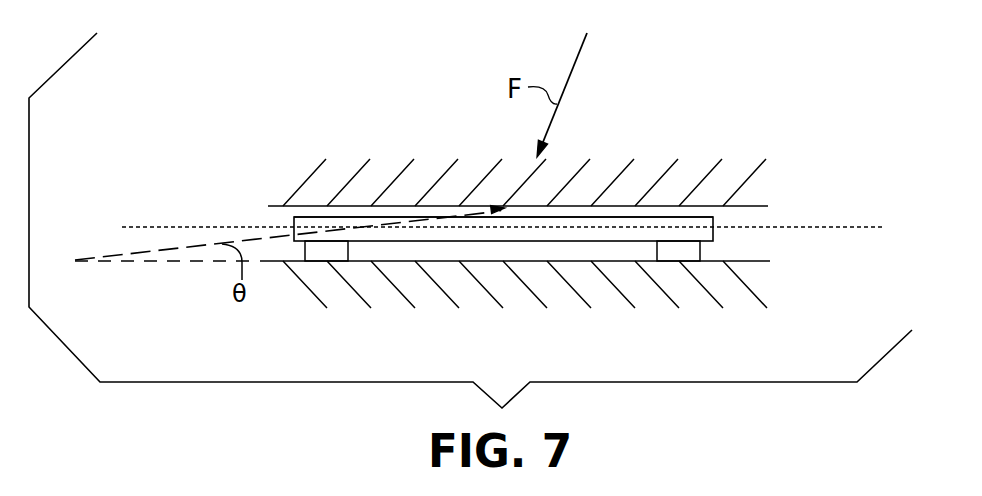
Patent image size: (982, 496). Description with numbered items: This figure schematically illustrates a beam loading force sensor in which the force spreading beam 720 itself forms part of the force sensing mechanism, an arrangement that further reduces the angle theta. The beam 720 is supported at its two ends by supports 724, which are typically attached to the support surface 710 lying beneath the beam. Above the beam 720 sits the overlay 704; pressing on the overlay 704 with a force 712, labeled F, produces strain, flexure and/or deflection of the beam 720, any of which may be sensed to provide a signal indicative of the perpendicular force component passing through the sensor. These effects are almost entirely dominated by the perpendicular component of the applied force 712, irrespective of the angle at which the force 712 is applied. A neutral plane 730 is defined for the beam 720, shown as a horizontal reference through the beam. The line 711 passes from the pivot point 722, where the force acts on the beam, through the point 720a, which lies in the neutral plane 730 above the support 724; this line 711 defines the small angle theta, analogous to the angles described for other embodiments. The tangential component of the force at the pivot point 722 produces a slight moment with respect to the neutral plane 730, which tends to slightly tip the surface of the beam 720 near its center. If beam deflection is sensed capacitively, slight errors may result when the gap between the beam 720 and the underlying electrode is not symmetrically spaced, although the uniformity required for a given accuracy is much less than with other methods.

The overlay 704 is at (748, 208).
The support surface 710 is at (745, 262).
The line 711 is at (148, 249).
The force 712 is at (576, 70).
The force spreading beam 720 is at (293, 227).
The point 720a is at (333, 235).
The pivot point 722 is at (503, 215).
The supports 724 is at (350, 250).
The neutral plane 730 is at (172, 227).